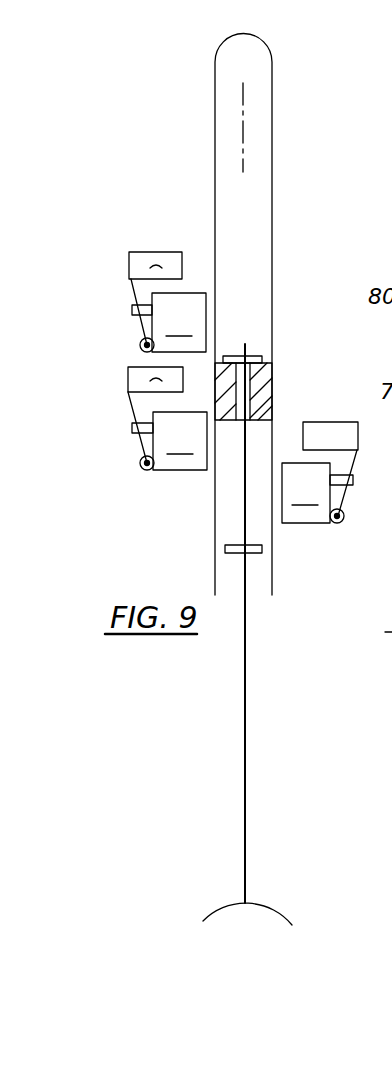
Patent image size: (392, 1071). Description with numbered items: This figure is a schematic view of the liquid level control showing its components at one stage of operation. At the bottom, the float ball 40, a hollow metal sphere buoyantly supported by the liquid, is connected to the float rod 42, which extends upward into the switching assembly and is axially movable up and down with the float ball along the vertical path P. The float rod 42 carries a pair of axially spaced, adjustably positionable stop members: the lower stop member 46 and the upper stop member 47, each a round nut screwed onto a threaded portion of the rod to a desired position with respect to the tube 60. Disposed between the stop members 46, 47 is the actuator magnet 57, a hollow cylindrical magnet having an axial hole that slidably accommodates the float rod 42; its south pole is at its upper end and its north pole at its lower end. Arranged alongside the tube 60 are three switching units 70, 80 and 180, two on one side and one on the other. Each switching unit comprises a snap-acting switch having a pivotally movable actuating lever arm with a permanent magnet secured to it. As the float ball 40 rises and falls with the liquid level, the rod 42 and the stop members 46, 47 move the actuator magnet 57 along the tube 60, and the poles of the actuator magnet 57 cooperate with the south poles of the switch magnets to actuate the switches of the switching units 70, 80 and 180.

The vertical path P is at (243, 89).
The float ball 40 is at (229, 906).
The float rod 42 is at (247, 646).
The lower stop member 46 is at (225, 549).
The upper stop member 47 is at (263, 357).
The actuator magnet 57 is at (260, 390).
The tube 60 is at (215, 505).
The switching unit 70 is at (131, 418).
The switching unit 80 is at (130, 282).
The switching unit 180 is at (331, 497).